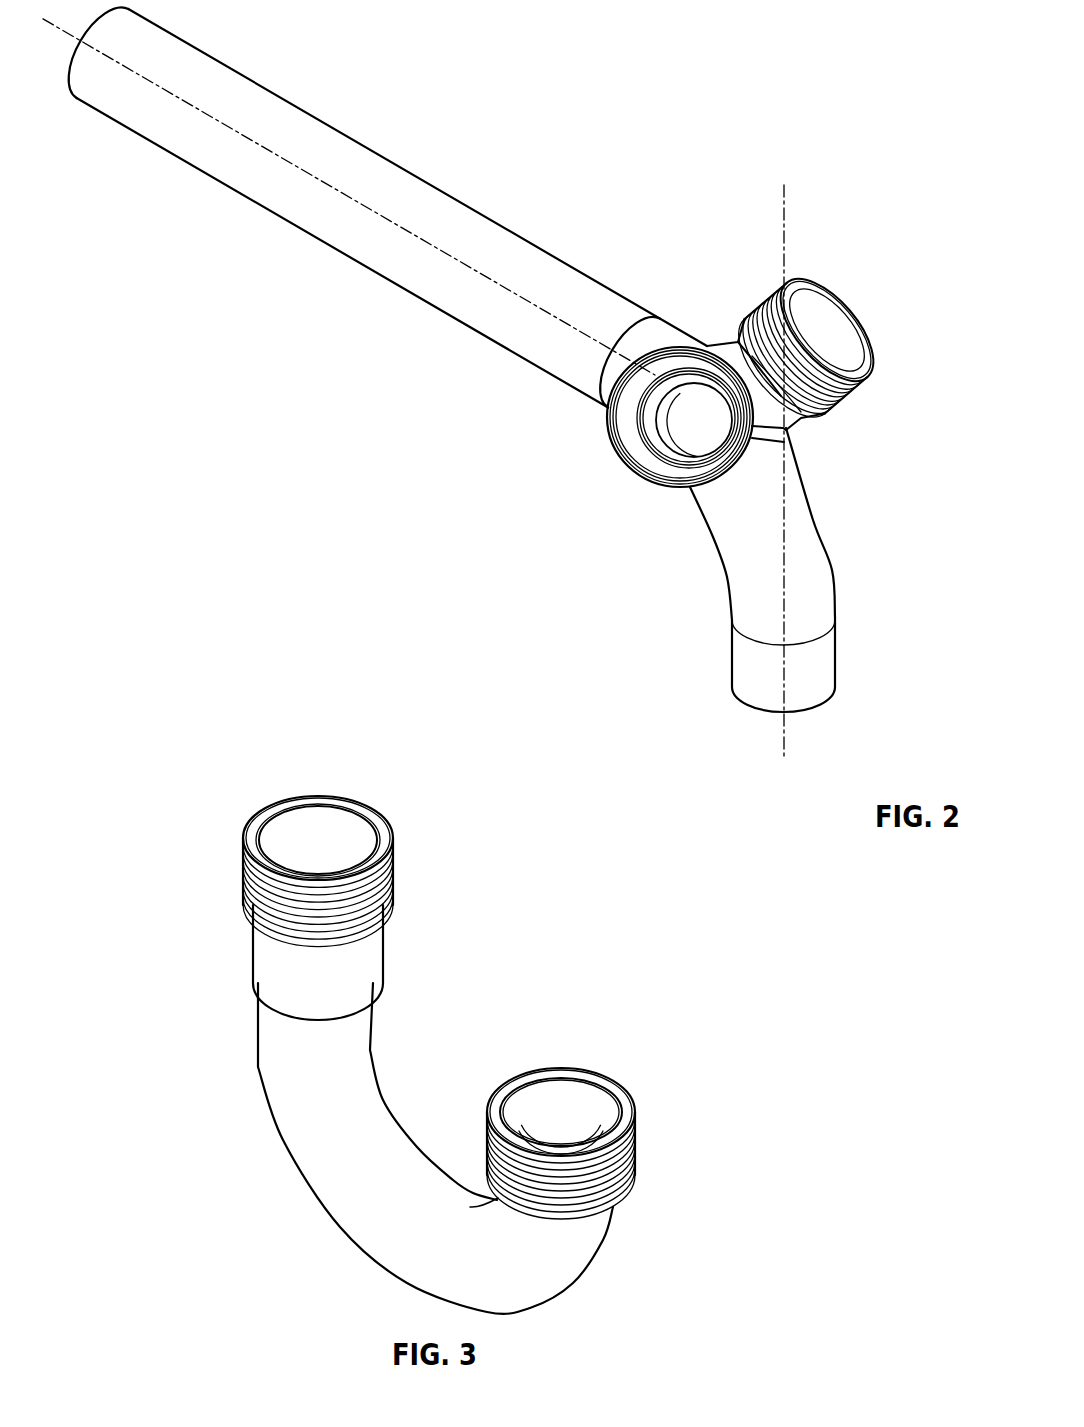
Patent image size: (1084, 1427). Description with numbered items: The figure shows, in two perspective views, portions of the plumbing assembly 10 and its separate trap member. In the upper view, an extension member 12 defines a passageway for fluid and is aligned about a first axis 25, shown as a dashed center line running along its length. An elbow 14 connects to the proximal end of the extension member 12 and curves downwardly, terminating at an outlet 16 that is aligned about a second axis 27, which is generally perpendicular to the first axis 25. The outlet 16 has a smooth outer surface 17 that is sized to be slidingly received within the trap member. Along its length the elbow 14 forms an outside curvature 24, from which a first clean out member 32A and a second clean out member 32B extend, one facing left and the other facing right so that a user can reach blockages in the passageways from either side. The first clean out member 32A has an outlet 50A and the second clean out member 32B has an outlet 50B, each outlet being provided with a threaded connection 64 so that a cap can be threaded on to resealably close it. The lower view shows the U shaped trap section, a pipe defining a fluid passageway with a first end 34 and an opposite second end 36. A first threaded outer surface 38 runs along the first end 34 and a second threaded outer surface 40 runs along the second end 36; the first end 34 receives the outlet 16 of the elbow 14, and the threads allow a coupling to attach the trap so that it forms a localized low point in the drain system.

In FIG. 2, the plumbing assembly 10 is at (471, 393).
In FIG. 2, the extension member 12 is at (375, 207).
In FIG. 2, the first axis 25 is at (165, 85).
In FIG. 2, the elbow 14 is at (792, 482).
In FIG. 2, the outlet 16 is at (822, 707).
In FIG. 2, the smooth outer surface 17 is at (825, 667).
In FIG. 2, the outside curvature 24 is at (816, 440).
In FIG. 2, the second axis 27 is at (783, 742).
In FIG. 2, the first clean out member 32A is at (623, 440).
In FIG. 2, the second clean out member 32B is at (788, 325).
In FIG. 2, the outlet of first clean out member 50A is at (835, 320).
In FIG. 2, the outlet of second clean out member 50B is at (633, 457).
In FIG. 2, the threaded connection 64 is at (683, 485).
In FIG. 3, the first end 34 is at (599, 1121).
In FIG. 3, the second end 36 is at (284, 864).
In FIG. 3, the first threaded outer surface 38 is at (637, 1143).
In FIG. 3, the second threaded outer surface 40 is at (243, 868).